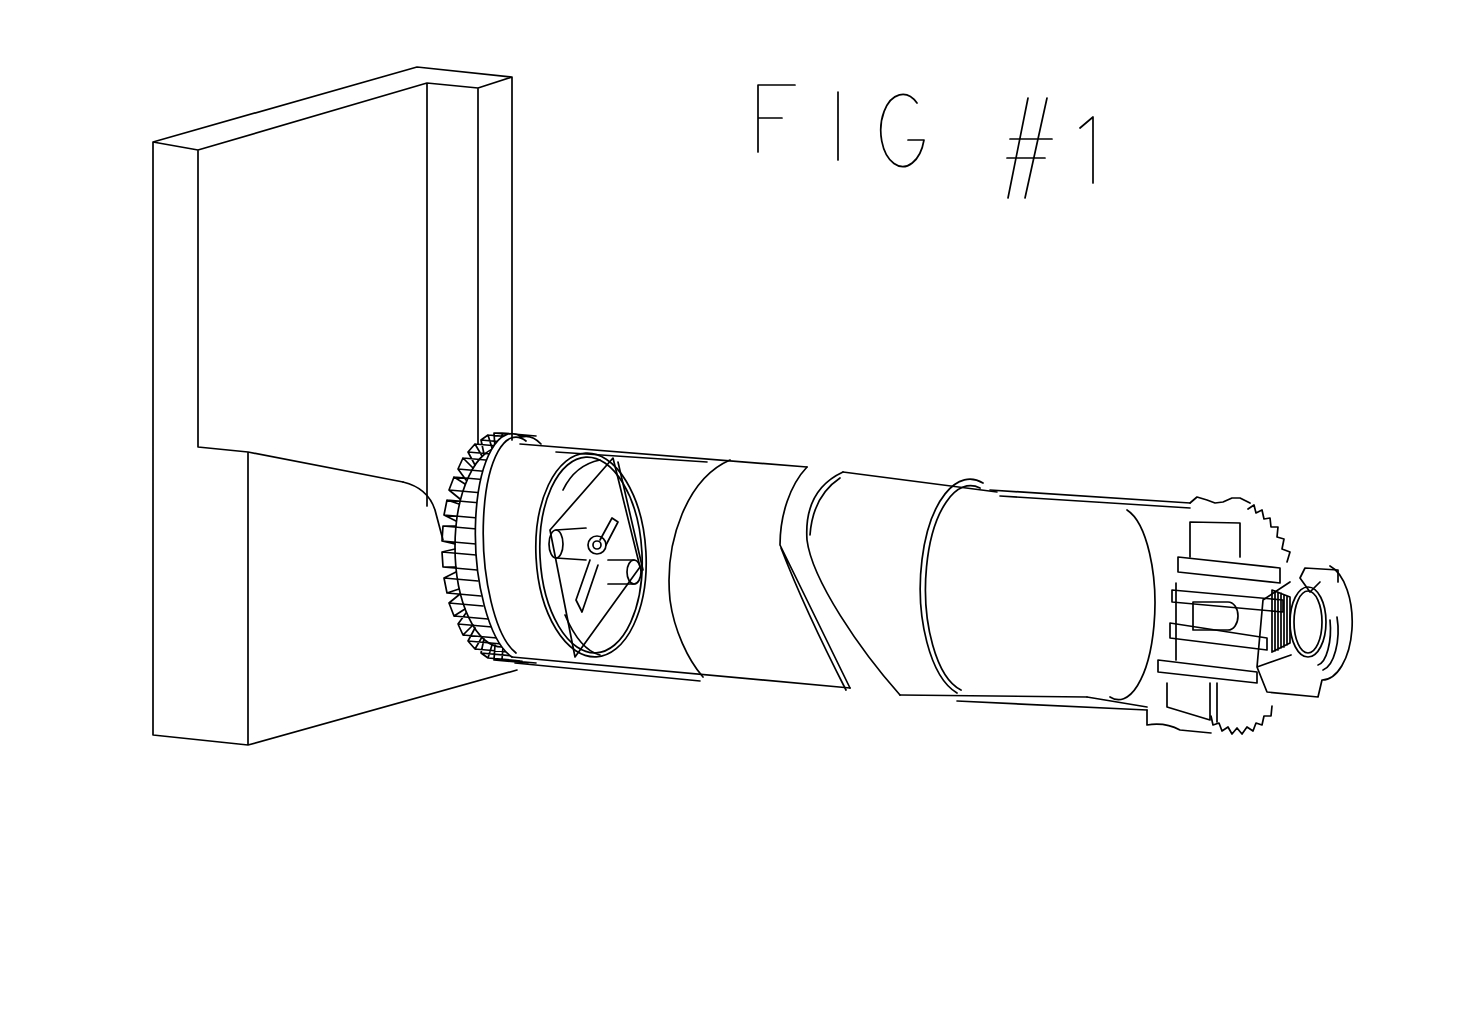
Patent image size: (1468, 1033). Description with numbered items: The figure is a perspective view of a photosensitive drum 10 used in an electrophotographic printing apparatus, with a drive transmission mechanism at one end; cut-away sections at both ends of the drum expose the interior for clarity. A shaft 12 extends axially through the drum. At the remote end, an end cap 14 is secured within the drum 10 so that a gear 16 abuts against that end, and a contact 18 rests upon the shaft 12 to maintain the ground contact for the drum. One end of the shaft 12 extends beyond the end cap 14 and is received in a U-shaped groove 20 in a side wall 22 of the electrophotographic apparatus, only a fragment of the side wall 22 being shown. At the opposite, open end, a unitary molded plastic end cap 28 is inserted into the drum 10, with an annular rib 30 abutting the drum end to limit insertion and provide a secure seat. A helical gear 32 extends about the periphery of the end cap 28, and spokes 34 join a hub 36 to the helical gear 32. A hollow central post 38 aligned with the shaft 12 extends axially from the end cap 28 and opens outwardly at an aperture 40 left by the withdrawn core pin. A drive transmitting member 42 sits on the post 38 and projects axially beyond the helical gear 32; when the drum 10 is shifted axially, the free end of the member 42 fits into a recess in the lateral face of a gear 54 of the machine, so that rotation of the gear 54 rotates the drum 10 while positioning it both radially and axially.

The photosensitive drum 10 is at (892, 482).
The shaft 12 is at (606, 522).
The end cap 14 is at (509, 590).
The gear 16 is at (463, 607).
The contact 18 is at (593, 597).
The U-shaped groove 20 is at (440, 522).
The side wall 22 is at (343, 558).
The end cap 28 is at (1107, 697).
The annular rib 30 is at (1195, 503).
The helical gear 32 is at (1220, 503).
The spokes 34 is at (1170, 633).
The hub 36 is at (1193, 617).
The central post 38 is at (1240, 680).
The aperture 40 is at (1307, 623).
The drive transmitting member 42 is at (1303, 597).
The gear 54 is at (1327, 568).